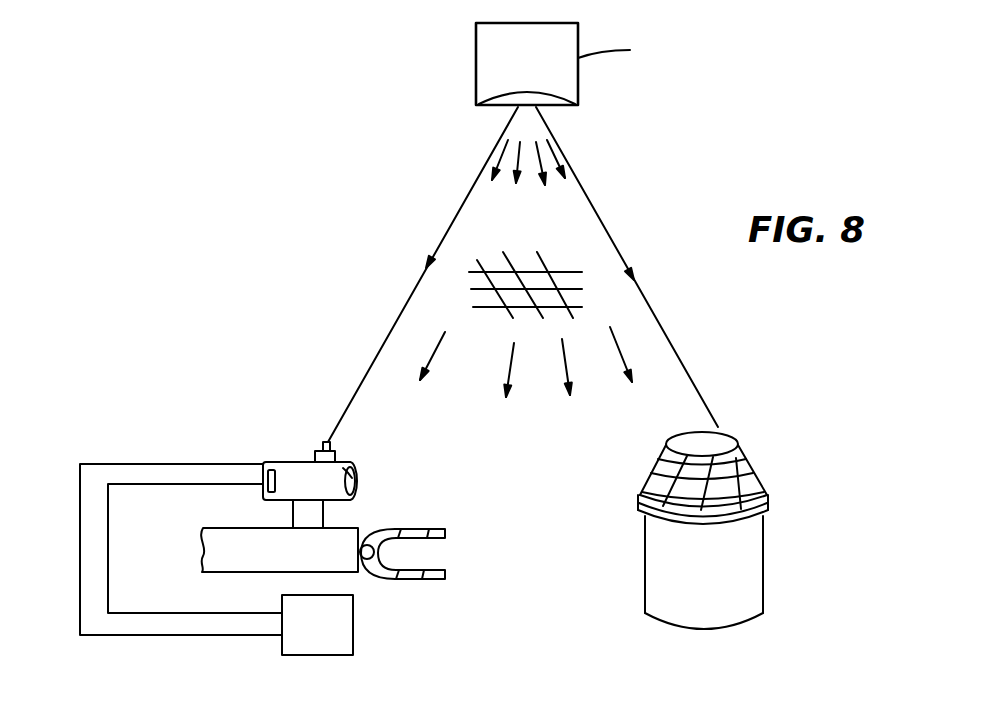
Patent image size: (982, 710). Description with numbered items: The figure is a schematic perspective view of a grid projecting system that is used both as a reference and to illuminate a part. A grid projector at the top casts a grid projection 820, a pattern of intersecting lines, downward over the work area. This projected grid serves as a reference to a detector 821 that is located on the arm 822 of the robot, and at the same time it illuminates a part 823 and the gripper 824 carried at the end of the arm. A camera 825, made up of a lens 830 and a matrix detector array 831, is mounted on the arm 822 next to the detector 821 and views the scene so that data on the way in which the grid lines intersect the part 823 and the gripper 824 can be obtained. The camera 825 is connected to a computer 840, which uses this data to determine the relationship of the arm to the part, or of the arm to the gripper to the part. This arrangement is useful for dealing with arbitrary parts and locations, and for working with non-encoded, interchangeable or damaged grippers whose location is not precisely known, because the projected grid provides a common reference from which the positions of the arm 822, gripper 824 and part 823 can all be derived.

The grid projection 820 is at (590, 268).
The detector 821 is at (325, 442).
The arm 822 is at (317, 562).
The part 823 is at (763, 492).
The gripper 824 is at (442, 579).
The camera 825 is at (343, 468).
The lens 830 is at (358, 489).
The matrix detector array 831 is at (272, 469).
The computer 840 is at (341, 629).